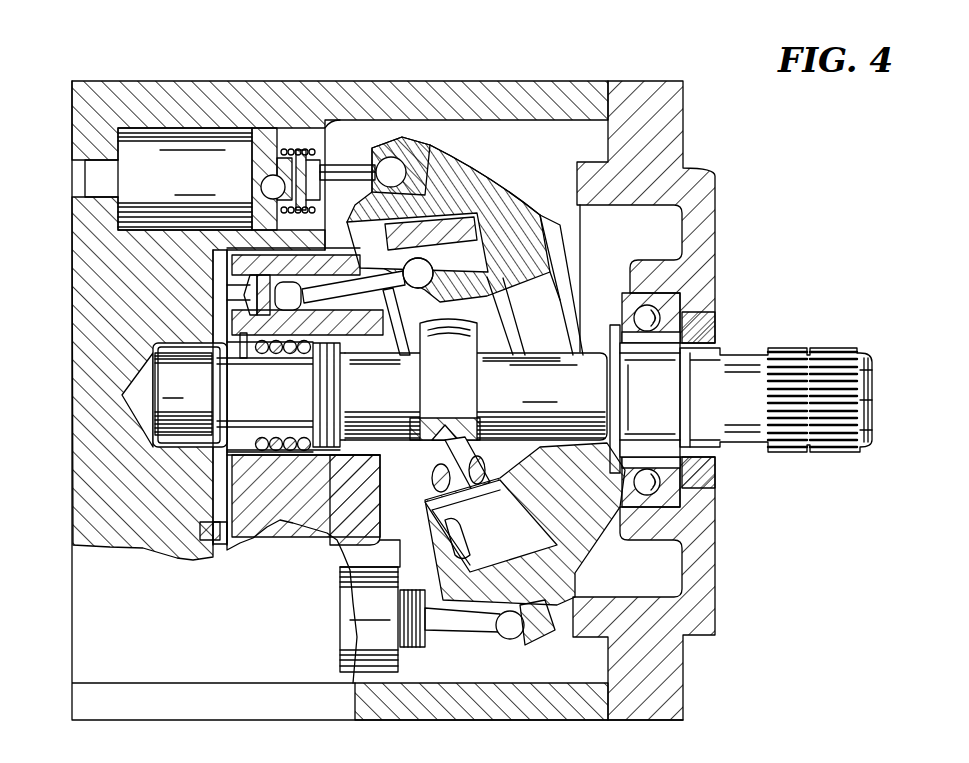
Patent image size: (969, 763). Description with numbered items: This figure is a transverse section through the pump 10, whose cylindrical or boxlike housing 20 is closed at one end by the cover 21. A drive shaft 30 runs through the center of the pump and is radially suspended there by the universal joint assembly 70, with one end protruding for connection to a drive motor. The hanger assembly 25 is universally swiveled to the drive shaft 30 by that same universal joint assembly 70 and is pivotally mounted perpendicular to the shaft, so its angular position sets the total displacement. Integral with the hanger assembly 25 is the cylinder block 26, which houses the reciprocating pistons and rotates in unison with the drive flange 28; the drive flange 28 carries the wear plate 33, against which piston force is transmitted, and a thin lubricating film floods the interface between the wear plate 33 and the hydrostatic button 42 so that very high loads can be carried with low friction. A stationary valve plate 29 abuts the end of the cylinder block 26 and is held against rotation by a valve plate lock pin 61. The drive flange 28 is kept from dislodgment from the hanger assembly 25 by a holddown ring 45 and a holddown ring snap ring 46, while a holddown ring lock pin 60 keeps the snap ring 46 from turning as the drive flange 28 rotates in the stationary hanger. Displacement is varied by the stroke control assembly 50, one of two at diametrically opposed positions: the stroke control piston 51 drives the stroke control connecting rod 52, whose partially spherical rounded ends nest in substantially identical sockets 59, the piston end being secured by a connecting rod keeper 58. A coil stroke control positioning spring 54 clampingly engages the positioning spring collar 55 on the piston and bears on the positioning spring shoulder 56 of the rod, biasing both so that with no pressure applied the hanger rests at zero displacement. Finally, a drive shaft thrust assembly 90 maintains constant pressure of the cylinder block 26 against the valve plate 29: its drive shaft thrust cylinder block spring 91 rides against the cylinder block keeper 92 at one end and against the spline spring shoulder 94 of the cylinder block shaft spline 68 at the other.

The pump 10 is at (592, 68).
The housing 20 is at (149, 80).
The cover 21 is at (686, 132).
The hanger assembly 25 is at (500, 205).
The cylinder block 26 is at (373, 513).
The drive flange 28 is at (447, 215).
The valve plate 29 is at (213, 503).
The drive shaft 30 is at (575, 352).
The wear plate 33 is at (518, 255).
The hydrostatic button 42 is at (493, 283).
The holddown ring 45 is at (478, 612).
The holddown ring snap ring 46 is at (457, 605).
The stroke control assembly 50 is at (183, 150).
The stroke control piston 51 is at (247, 135).
The stroke control connecting rod 52 is at (360, 148).
The stroke control positioning spring 54 is at (301, 150).
The positioning spring collar 55 is at (283, 148).
The positioning spring shoulder 56 is at (355, 165).
The connecting rod keeper 58 is at (300, 212).
The socket 59 is at (262, 188).
The holddown ring lock pin 60 is at (430, 172).
The valve plate lock pin 61 is at (200, 537).
The cylinder block shaft spline 68 is at (340, 393).
The universal joint assembly 70 is at (490, 462).
The drive shaft thrust assembly 90 is at (253, 537).
The drive shaft thrust cylinder block spring 91 is at (287, 505).
The cylinder block keeper 92 is at (256, 372).
The spline spring shoulder 94 is at (297, 360).